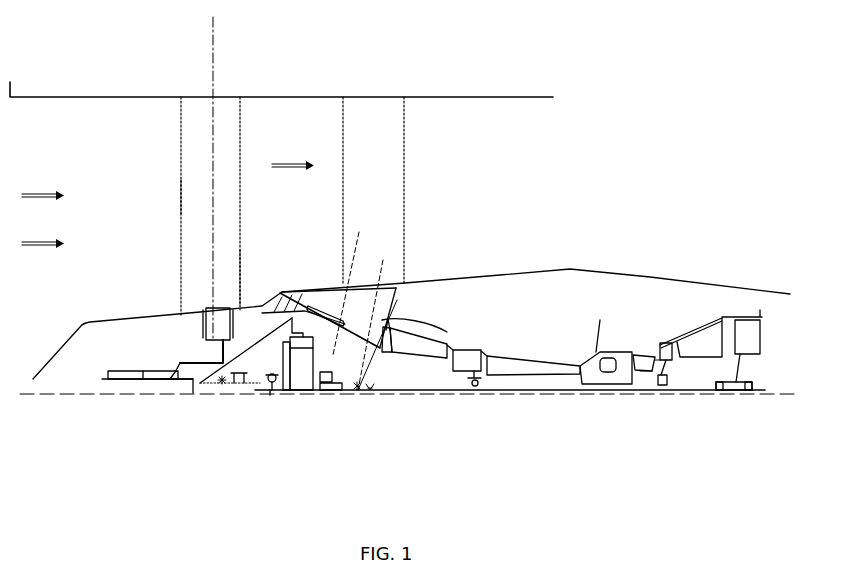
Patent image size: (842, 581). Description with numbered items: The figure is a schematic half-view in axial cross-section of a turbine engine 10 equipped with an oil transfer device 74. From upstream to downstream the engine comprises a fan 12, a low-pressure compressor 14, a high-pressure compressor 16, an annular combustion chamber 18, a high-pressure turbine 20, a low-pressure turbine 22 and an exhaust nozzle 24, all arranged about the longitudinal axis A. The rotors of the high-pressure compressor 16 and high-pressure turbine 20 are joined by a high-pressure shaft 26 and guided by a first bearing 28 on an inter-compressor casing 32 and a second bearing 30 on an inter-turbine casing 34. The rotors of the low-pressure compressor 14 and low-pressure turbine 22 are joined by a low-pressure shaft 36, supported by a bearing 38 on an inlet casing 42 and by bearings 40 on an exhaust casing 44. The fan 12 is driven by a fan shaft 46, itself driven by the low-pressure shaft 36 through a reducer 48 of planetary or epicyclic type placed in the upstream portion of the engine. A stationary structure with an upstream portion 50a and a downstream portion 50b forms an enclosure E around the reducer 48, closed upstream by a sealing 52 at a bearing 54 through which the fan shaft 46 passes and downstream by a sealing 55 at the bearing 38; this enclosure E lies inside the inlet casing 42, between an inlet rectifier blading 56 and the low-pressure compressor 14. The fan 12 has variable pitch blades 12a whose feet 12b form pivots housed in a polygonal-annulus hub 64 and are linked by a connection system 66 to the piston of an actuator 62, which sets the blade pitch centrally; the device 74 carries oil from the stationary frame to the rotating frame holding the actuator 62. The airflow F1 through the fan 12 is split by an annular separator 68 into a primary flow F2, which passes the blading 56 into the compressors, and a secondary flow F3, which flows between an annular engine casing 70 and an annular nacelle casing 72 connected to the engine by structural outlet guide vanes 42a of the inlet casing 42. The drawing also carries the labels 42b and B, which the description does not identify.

The turbine engine 10 is at (658, 90).
The fan 12 is at (245, 134).
The variable pitch blades 12a is at (195, 205).
The foot 12b is at (205, 308).
The low-pressure compressor 14 is at (445, 360).
The high-pressure compressor 16 is at (525, 375).
The annular combustion chamber 18 is at (640, 372).
The high-pressure turbine 20 is at (648, 378).
The low-pressure turbine 22 is at (697, 335).
The exhaust nozzle 24 is at (762, 292).
The high-pressure shaft 26 is at (600, 320).
The first bearing 28 is at (478, 387).
The second bearing 30 is at (668, 383).
The inter-compressor casing 32 is at (468, 352).
The inter-turbine casing 34 is at (665, 343).
The low-pressure shaft 36 is at (578, 386).
The bearing 38 is at (358, 392).
The bearings 40 is at (738, 391).
The inlet casing 42 is at (402, 307).
The outlet guide vanes 42a is at (378, 170).
The flap panel 42b is at (438, 331).
The exhaust casing 44 is at (762, 325).
The fan shaft 46 is at (170, 380).
The reducer 48 is at (299, 403).
The upstream portion 50a is at (250, 315).
The downstream portion 50b is at (410, 385).
The sealing 52 is at (222, 386).
The bearing 54 is at (238, 384).
The sealing 55 is at (366, 390).
The inlet rectifier blading 56 is at (300, 310).
The actuator 62 is at (125, 372).
The hub 64 is at (203, 310).
The connection system 66 is at (180, 362).
The annular separator 68 is at (282, 290).
The annular engine casing 70 is at (553, 269).
The annular nacelle casing 72 is at (505, 97).
The oil transfer device 74 is at (338, 386).
The longitudinal axis A is at (785, 394).
The vertical axis B is at (215, 35).
The enclosure E is at (373, 311).
The airflow F1 is at (40, 199).
The primary flow F2 is at (353, 279).
The secondary flow F3 is at (283, 158).